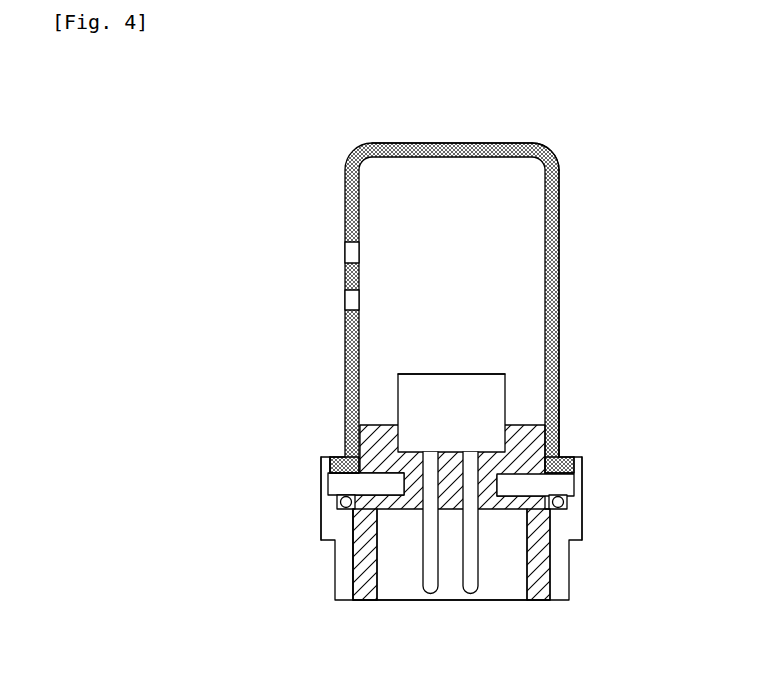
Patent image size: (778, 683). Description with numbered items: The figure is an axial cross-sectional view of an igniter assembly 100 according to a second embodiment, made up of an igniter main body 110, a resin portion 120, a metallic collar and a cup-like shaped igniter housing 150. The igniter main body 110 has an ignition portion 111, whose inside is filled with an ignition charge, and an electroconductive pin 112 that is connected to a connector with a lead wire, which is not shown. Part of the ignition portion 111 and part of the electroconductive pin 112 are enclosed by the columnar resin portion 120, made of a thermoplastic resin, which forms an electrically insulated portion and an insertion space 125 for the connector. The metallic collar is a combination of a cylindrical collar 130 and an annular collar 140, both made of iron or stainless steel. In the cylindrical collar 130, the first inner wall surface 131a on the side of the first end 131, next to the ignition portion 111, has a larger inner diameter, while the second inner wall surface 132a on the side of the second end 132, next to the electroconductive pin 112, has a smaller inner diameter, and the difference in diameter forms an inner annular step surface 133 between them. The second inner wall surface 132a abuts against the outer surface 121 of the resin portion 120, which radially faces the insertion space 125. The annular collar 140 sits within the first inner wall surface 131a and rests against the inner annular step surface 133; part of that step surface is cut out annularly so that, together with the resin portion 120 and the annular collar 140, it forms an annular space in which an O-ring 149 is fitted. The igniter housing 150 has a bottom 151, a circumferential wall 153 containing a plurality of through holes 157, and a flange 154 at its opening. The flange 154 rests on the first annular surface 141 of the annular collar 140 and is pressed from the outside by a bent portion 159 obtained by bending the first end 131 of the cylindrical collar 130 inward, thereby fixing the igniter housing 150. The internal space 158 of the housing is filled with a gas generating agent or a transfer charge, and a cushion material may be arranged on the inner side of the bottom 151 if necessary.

The igniter assembly 100 is at (549, 143).
The igniter main body 110 is at (460, 373).
The ignition portion 111 is at (470, 421).
The electroconductive pin 112 is at (474, 582).
The resin portion 120 is at (553, 557).
The outer surface 121 is at (536, 551).
The insertion space 125 is at (410, 550).
The cylindrical collar 130 is at (310, 534).
The first end 131 is at (330, 457).
The bent portion 159 is at (559, 465).
The first inner wall surface 131a is at (330, 470).
The second end 132 is at (343, 601).
The second inner wall surface 132a is at (352, 560).
The inner annular step surface 133 is at (329, 481).
The annular collar 140 is at (576, 484).
The first annular surface 141 is at (559, 448).
The O-ring 149 is at (567, 504).
The igniter housing 150 is at (438, 140).
The bottom 151 is at (494, 142).
The circumferential wall 153 is at (560, 258).
The flange 154 is at (583, 463).
The through holes 157 is at (345, 298).
The internal space 158 is at (433, 258).